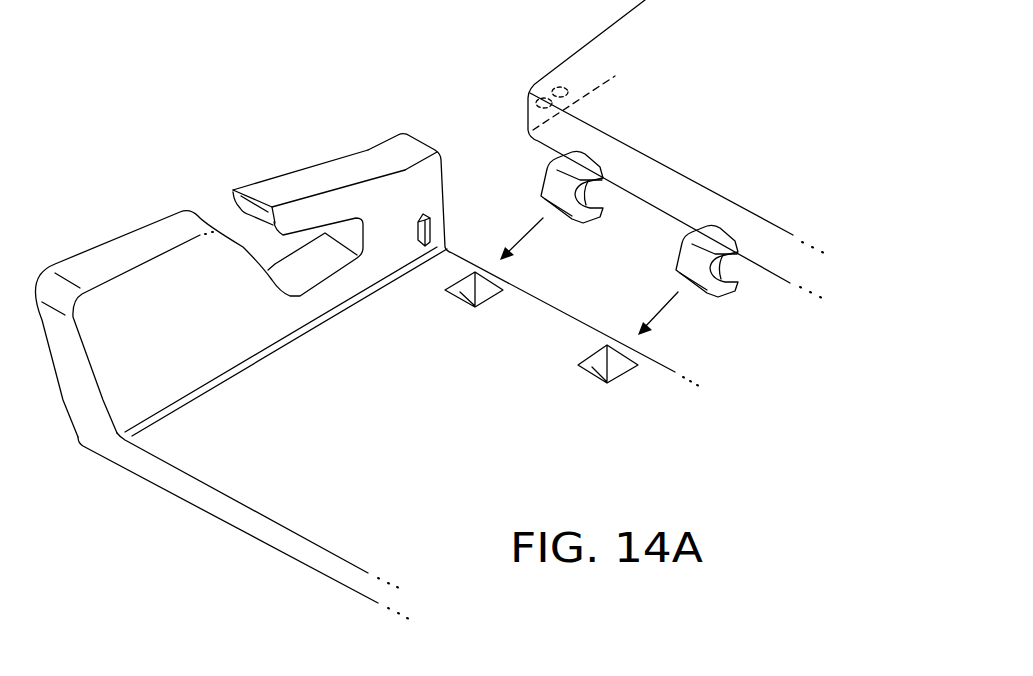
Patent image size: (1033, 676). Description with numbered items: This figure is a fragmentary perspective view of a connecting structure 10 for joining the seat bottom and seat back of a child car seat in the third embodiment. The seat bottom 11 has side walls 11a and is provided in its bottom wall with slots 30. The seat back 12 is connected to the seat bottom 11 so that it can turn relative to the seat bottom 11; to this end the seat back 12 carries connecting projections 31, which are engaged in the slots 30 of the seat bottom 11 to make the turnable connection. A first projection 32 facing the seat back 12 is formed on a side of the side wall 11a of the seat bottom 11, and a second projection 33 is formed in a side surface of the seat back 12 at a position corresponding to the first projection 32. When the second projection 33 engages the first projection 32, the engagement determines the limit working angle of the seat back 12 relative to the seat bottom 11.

The bracket 10 is at (458, 104).
The seat bottom 11 is at (247, 517).
The side wall 11a is at (118, 375).
The seat back 12 is at (655, 188).
The slot 30 is at (468, 290).
The connecting projection 31 is at (558, 219).
The first projection 32 is at (430, 225).
The second projection 33 is at (562, 82).